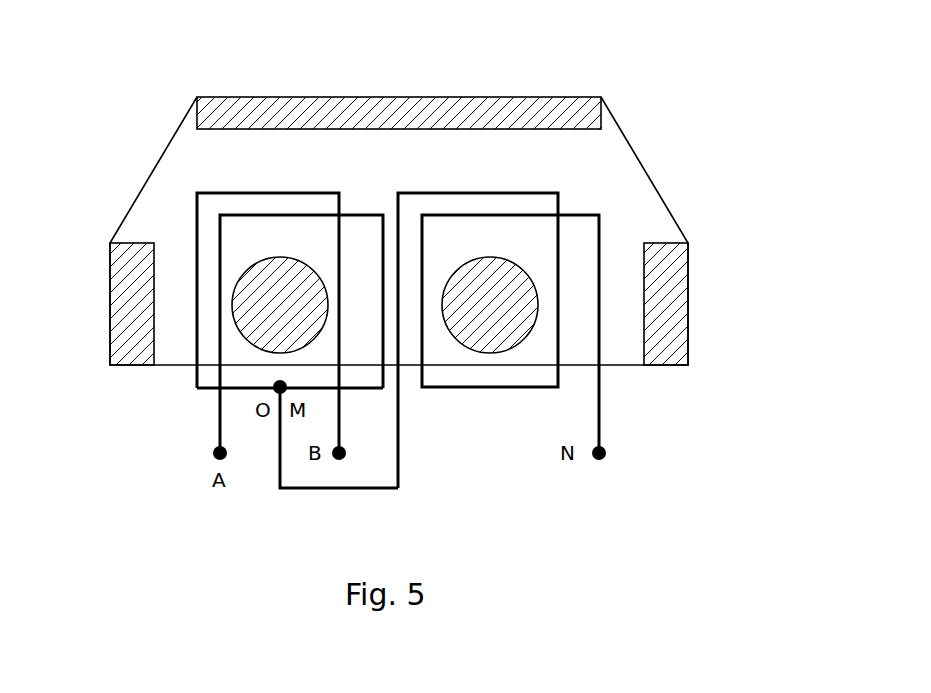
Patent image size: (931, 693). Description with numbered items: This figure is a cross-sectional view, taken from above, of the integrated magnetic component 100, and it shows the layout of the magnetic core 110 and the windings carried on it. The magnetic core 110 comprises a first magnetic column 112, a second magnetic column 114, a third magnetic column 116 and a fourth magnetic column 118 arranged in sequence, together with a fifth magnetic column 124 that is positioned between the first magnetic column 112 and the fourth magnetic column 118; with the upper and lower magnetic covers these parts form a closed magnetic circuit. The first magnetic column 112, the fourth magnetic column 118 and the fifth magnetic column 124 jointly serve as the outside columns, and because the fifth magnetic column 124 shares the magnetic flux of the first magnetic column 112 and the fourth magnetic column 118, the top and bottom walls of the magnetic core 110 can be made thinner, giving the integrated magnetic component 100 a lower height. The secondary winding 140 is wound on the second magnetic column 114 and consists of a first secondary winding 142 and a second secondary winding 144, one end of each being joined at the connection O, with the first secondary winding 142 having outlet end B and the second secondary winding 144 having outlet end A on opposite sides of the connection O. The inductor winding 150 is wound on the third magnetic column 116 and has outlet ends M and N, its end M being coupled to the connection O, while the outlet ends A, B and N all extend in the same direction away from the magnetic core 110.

The integrated magnetic component 100 is at (90, 151).
The magnetic core 110 is at (690, 345).
The first magnetic column 112 is at (117, 302).
The fourth magnetic column 118 is at (676, 302).
The fifth magnetic column 124 is at (378, 107).
The second magnetic column 114 is at (278, 275).
The third magnetic column 116 is at (488, 275).
The secondary winding 140 is at (205, 348).
The first secondary winding 142 is at (197, 350).
The second secondary winding 144 is at (220, 375).
The inductor winding 150 is at (558, 207).